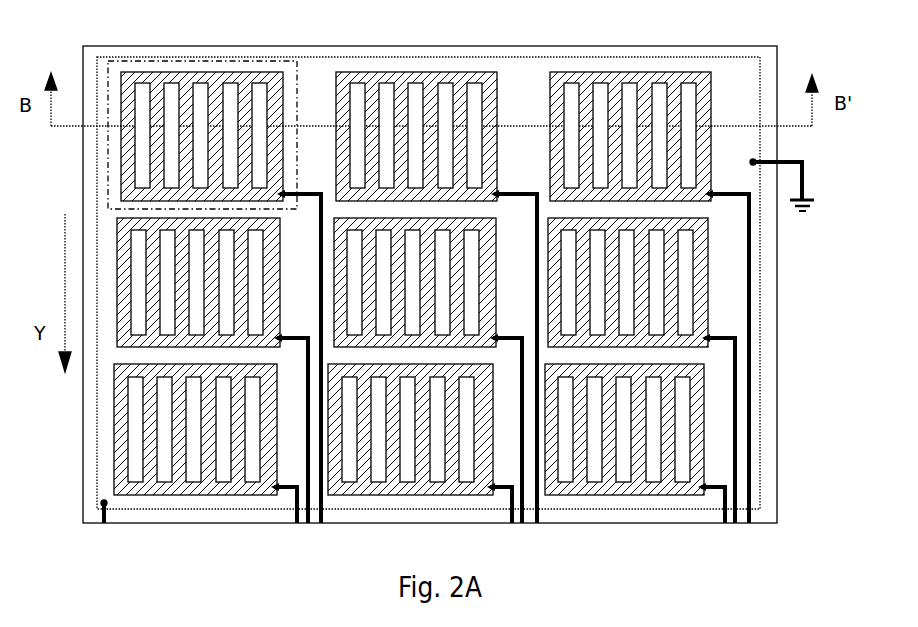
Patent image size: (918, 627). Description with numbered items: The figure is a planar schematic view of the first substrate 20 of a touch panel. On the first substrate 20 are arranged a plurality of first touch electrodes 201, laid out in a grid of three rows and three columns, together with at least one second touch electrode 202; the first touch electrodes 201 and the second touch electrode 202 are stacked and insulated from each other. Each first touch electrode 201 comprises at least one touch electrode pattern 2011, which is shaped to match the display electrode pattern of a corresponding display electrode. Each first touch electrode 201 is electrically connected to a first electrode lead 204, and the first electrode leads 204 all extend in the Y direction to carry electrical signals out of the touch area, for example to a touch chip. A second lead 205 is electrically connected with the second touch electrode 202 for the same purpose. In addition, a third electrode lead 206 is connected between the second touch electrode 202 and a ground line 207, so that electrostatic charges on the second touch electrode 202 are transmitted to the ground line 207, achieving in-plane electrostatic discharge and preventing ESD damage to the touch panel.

The first substrate 20 is at (672, 46).
The first touch electrode 201 is at (400, 70).
The touch electrode pattern 2011 is at (210, 63).
The second touch electrode 202 is at (537, 80).
The first electrode lead 204 is at (295, 513).
The second lead 205 is at (107, 520).
The third electrode lead 206 is at (786, 161).
The ground line 207 is at (800, 213).